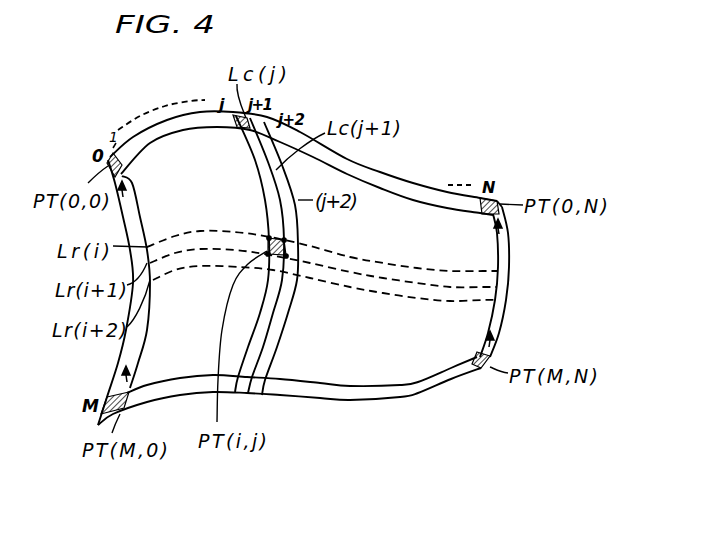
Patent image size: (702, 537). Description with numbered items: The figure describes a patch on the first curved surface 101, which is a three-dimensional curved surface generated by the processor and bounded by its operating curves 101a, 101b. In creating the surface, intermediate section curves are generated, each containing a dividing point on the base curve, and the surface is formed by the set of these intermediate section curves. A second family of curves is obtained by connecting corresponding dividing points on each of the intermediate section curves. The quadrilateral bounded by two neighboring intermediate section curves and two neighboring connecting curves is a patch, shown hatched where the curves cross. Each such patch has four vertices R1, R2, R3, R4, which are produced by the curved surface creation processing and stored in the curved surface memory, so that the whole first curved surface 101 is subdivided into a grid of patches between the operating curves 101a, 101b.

The first curved surface 101 is at (448, 357).
The operating curve of the first curved surface 101a is at (381, 172).
The operating curve of the first curved surface 101b is at (326, 393).
The vertex of patch R1 is at (270, 237).
The vertex of patch R2 is at (269, 254).
The vertex of patch R3 is at (285, 240).
The vertex of patch R4 is at (295, 272).